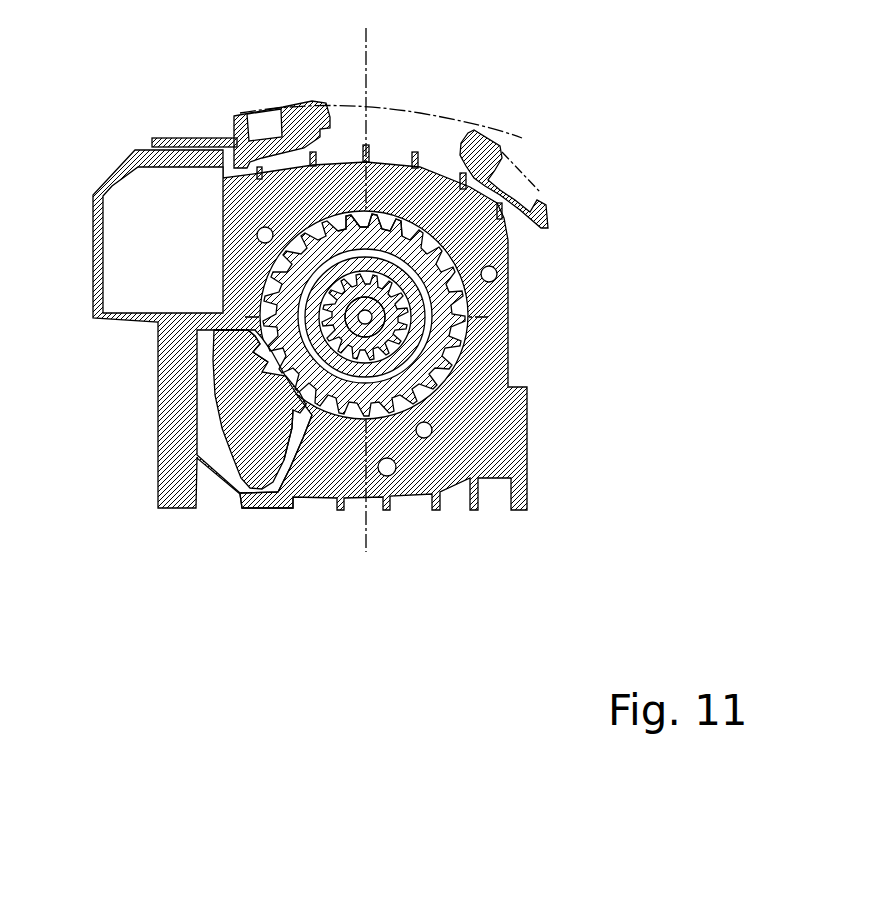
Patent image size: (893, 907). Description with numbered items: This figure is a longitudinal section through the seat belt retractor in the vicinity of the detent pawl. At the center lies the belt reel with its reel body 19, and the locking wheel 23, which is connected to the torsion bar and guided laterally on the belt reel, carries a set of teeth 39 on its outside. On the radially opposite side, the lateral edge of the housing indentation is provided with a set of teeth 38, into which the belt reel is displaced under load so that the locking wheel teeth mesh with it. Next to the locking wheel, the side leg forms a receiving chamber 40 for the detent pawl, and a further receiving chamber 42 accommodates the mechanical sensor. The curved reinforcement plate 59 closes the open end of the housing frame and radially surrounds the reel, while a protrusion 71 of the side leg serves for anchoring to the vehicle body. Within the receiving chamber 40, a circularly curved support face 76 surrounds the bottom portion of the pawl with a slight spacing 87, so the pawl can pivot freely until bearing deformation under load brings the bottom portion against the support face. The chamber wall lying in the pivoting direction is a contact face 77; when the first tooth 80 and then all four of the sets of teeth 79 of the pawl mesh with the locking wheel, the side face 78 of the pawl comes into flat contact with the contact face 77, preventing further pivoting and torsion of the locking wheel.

The reel body 19 is at (404, 348).
The locking wheel 23 is at (457, 302).
The set of teeth 38 is at (423, 221).
The set of teeth 39 is at (363, 218).
The receiving chamber 40 is at (205, 383).
The further receiving chamber 42 is at (133, 203).
The reinforcement plate 59 is at (500, 147).
The protrusion 71 is at (242, 496).
The support face 76 is at (270, 491).
The contact face 77 is at (332, 425).
The side face 78 is at (290, 436).
The sets of teeth 79 is at (268, 362).
The first tooth 80 is at (297, 382).
The spacing 87 is at (311, 420).